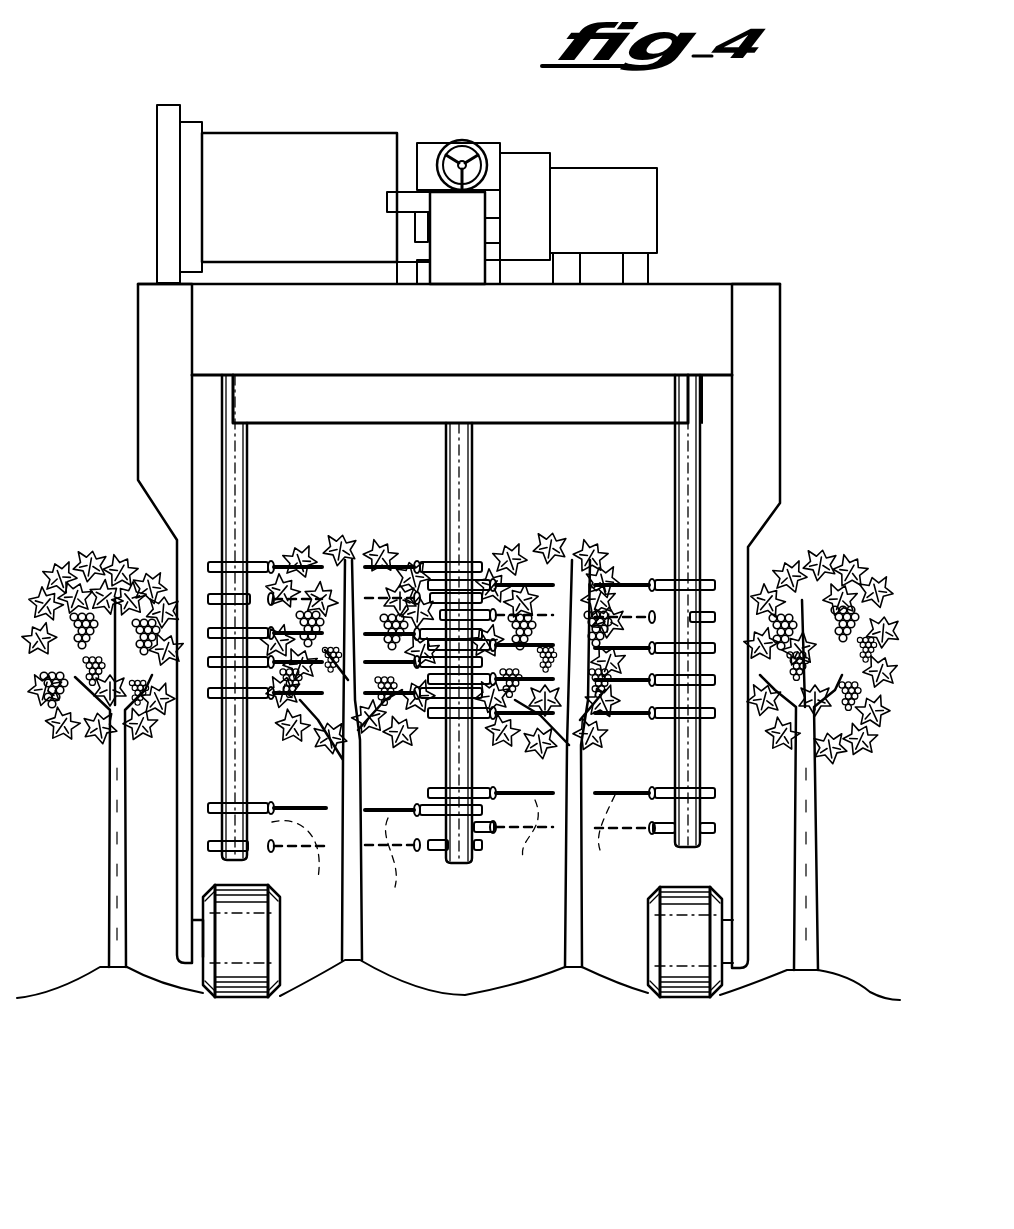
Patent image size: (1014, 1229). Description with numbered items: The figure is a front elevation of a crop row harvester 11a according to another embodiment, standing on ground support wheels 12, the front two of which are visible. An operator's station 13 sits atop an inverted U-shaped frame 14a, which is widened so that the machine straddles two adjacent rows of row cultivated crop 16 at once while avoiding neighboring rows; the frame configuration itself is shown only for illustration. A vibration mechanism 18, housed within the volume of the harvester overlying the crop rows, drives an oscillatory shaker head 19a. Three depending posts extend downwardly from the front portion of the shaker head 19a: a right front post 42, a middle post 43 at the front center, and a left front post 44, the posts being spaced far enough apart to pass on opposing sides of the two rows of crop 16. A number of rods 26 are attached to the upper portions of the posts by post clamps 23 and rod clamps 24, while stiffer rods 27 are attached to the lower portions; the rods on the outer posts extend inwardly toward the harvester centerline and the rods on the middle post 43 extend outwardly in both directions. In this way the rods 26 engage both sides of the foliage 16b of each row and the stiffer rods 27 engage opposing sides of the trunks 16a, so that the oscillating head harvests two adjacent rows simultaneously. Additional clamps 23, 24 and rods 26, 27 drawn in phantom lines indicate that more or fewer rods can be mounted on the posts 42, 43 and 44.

The mobile harvester 11a is at (705, 245).
The ground support wheels 12 is at (248, 960).
The operator's station 13 is at (460, 268).
The inverted U-shaped frame 14a is at (137, 312).
The row cultivated crop 16 is at (470, 717).
The trunks 16a is at (108, 838).
The foliage 16b is at (58, 580).
The vibration mechanism 18 is at (712, 302).
The oscillatory shaker head 19a is at (384, 426).
The post clamps 23 is at (232, 562).
The rod clamps 24 is at (417, 563).
The rods 26 is at (276, 562).
The stiffer rods 27 is at (454, 861).
The right front post 42 is at (246, 496).
The middle post 43 is at (468, 488).
The left front post 44 is at (682, 487).